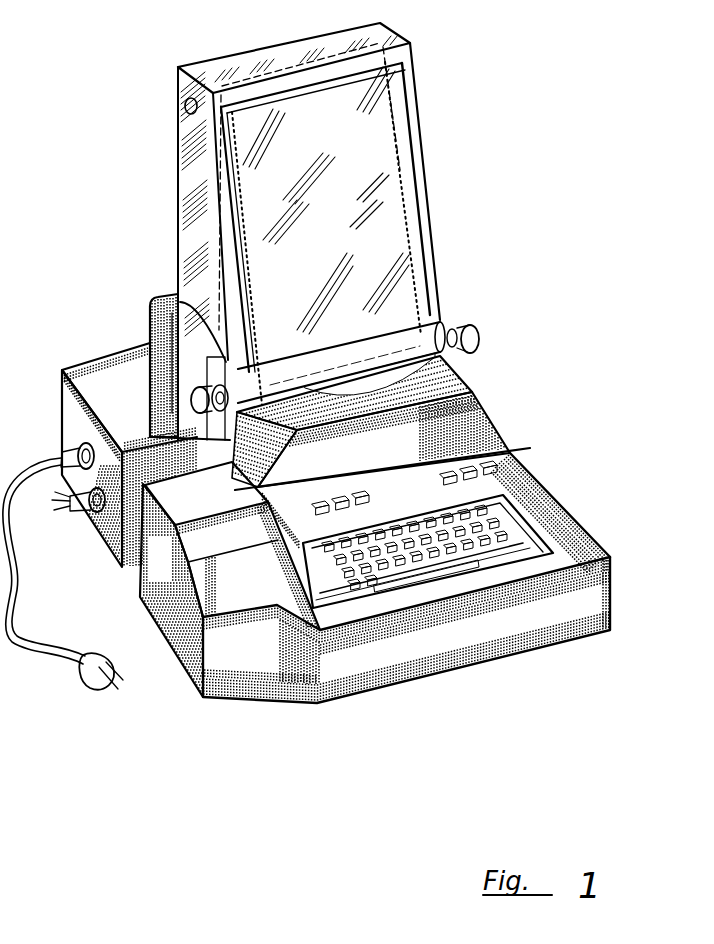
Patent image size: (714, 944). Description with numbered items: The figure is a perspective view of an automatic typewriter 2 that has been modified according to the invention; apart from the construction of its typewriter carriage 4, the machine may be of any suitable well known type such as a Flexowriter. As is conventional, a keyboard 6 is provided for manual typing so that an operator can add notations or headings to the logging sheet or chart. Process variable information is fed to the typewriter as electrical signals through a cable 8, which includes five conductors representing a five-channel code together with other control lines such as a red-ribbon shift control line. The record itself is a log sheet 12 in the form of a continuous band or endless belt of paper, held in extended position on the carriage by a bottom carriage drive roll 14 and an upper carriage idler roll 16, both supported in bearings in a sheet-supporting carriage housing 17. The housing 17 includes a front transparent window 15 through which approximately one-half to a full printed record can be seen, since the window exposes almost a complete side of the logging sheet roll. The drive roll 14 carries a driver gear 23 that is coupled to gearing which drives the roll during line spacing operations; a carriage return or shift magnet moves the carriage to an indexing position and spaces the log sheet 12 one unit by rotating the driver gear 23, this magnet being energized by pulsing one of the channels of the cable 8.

The automatic typewriter 2 is at (120, 605).
The typewriter carriage 4 is at (146, 317).
The keyboard 6 is at (575, 508).
The cable 8 is at (85, 510).
The log sheet 12 is at (367, 130).
The bottom carriage drive roll 14 is at (176, 293).
The front transparent window 15 is at (390, 197).
The upper carriage idler roll 16 is at (222, 84).
The sheet-supporting carriage housing 17 is at (193, 207).
The driver gear 23 is at (453, 326).